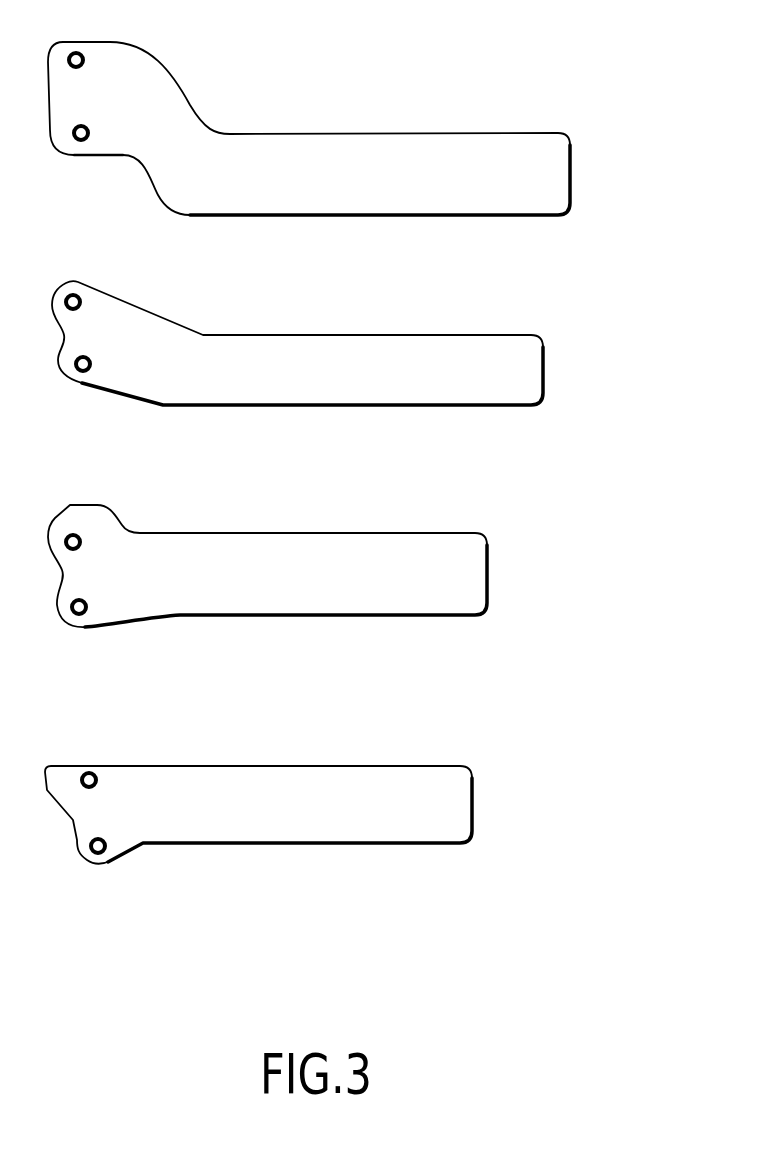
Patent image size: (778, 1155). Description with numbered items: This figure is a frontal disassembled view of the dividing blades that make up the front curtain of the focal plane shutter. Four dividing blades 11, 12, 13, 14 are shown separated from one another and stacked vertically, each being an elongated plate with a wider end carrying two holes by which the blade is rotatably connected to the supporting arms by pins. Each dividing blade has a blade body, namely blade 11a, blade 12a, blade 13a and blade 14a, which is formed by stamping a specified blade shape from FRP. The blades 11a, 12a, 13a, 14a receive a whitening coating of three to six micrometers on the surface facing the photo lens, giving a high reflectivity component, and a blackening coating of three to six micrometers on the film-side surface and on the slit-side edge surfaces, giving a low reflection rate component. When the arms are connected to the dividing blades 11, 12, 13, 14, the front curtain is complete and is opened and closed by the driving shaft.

The dividing blade 11 is at (560, 811).
The blade 11a is at (310, 815).
The dividing blade 12 is at (570, 591).
The blade 12a is at (303, 583).
The dividing blade 13 is at (604, 377).
The blade 13a is at (332, 382).
The dividing blade 14 is at (612, 182).
The blade 14a is at (358, 193).